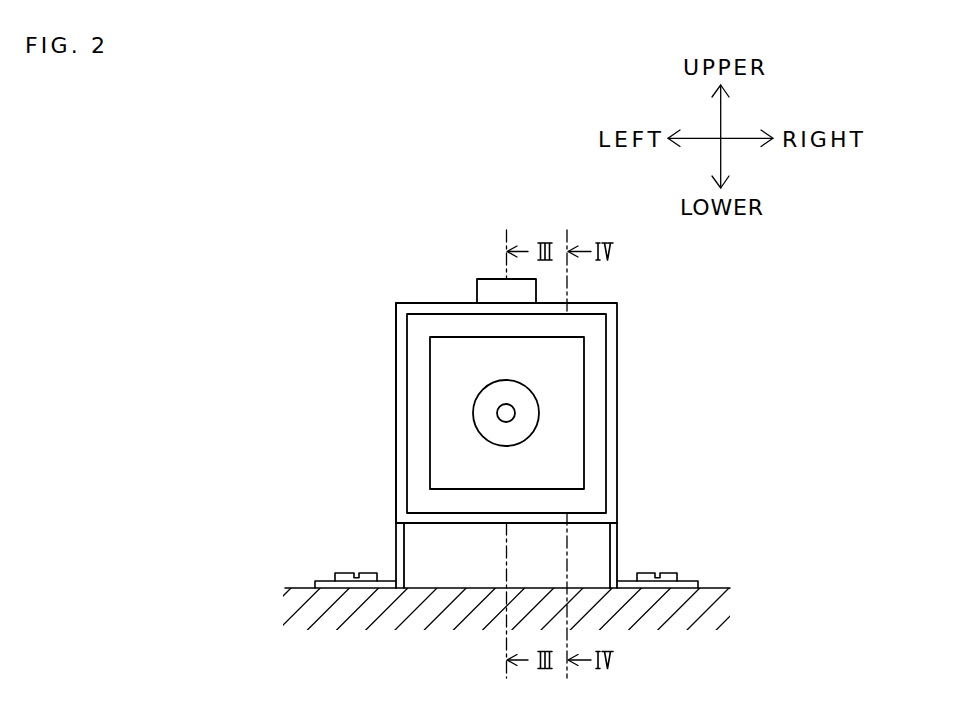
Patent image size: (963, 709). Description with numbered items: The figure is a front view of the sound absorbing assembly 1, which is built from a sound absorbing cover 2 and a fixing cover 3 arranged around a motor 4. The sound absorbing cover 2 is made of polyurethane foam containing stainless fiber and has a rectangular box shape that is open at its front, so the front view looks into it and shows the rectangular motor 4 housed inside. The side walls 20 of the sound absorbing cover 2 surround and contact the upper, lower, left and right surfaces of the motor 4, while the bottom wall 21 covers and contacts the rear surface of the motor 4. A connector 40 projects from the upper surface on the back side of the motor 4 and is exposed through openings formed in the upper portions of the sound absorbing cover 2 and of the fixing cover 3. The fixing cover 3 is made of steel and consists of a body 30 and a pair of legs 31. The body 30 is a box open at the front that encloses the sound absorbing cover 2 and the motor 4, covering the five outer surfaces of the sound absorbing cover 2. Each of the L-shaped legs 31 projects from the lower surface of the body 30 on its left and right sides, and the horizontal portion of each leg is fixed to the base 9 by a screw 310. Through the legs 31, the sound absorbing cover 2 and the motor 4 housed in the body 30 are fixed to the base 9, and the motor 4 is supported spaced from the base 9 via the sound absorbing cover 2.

The sound absorbing assembly 1 is at (340, 274).
The sound absorbing cover 2 is at (567, 436).
The fixing cover 3 is at (441, 309).
The motor 4 is at (441, 360).
The base 9 is at (302, 602).
The side walls 20 is at (593, 423).
The bottom wall 21 is at (533, 501).
The body 30 is at (400, 445).
The legs 31 is at (400, 552).
The connector 40 is at (492, 287).
The screw 310 is at (665, 575).